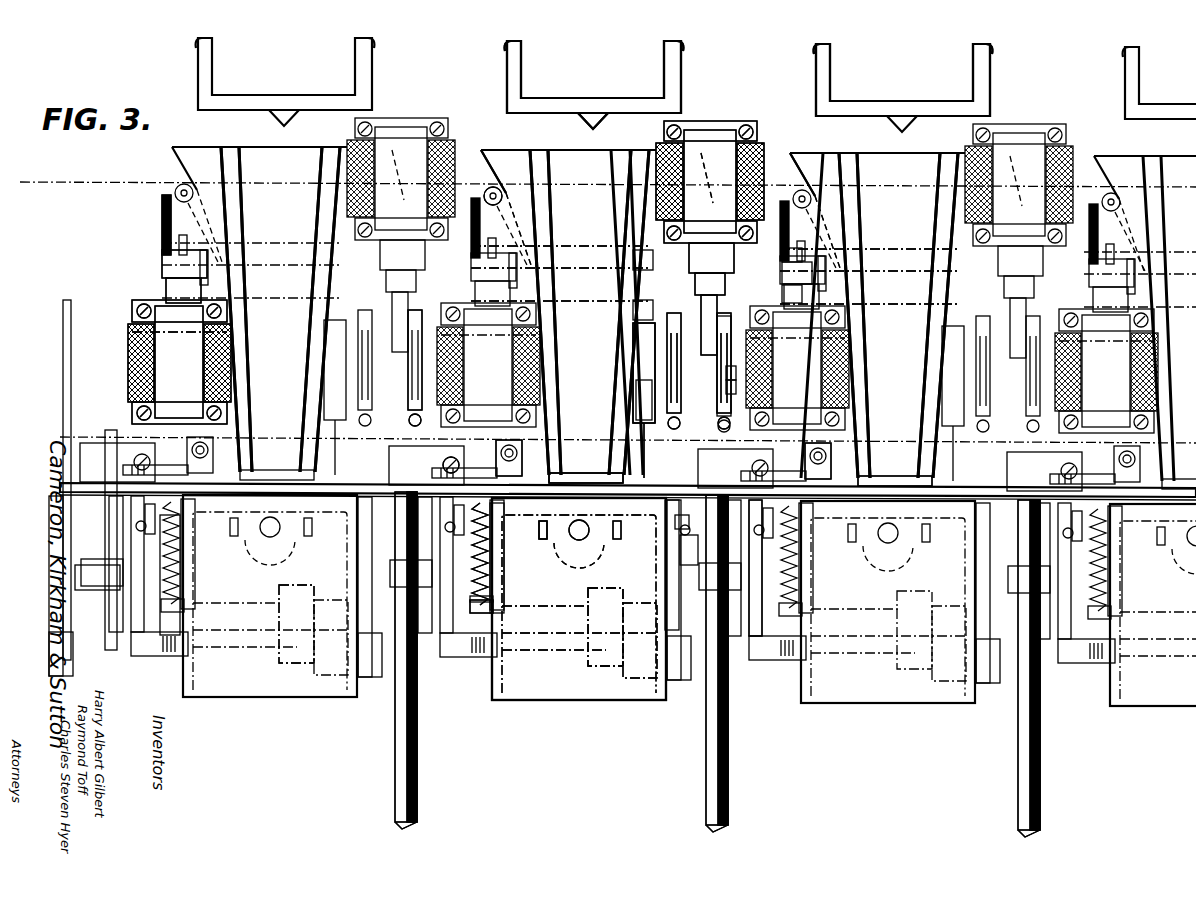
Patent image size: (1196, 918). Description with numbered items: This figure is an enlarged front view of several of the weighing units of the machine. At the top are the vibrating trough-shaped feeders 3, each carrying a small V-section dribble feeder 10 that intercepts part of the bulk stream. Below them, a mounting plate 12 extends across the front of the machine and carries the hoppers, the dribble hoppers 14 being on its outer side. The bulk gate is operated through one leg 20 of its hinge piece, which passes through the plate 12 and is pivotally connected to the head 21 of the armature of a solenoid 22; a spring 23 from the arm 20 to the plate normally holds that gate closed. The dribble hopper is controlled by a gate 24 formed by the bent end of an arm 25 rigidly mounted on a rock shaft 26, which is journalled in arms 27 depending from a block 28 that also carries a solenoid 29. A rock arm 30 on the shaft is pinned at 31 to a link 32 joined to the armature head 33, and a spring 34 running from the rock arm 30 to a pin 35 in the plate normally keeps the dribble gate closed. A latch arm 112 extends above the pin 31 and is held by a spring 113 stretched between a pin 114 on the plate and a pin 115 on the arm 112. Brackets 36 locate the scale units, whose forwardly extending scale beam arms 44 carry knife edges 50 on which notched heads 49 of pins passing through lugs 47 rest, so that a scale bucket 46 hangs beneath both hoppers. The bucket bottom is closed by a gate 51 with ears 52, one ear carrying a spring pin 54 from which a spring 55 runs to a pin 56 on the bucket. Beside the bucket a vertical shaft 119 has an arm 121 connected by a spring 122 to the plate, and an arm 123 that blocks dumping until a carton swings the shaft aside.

The vibrating trough-shaped feeder 3 is at (674, 84).
The dribble feeder trough 10 is at (596, 122).
The dribble hopper 14 is at (570, 166).
The mounting plate 12 is at (463, 190).
The solenoid 29 is at (690, 212).
The spring 23 is at (164, 220).
The leg of hinge piece 20 is at (190, 252).
The armature head 21 is at (170, 290).
The solenoid 22 is at (137, 370).
The pin 115 is at (318, 305).
The arm of latch lever 112 is at (325, 330).
The spring 113 is at (330, 355).
The pin 114 is at (330, 412).
The spring 34 is at (414, 390).
The pin 35 is at (413, 416).
The block 28 is at (634, 260).
The arms 27 is at (634, 310).
The rock shaft 26 is at (634, 330).
The arm 25 is at (638, 390).
The armature head 33 is at (782, 256).
The link 32 is at (782, 273).
The rock arm 30 is at (727, 372).
The pin 31 is at (728, 386).
The arm 121 is at (440, 457).
The spring 122 is at (474, 458).
The dribble gate 24 is at (560, 475).
The bracket 36 is at (752, 545).
The scale bucket 46 is at (685, 535).
The lug 47 is at (678, 520).
The notched head 49 is at (684, 532).
The knife edge 50 is at (684, 545).
The scale beam arm 44 is at (490, 560).
The pin 56 is at (545, 526).
The spring 55 is at (492, 578).
The spring pin 54 is at (495, 600).
The ears 52 is at (494, 610).
The arm 123 is at (365, 572).
The gate 51 is at (590, 701).
The vertical shaft 119 is at (418, 776).